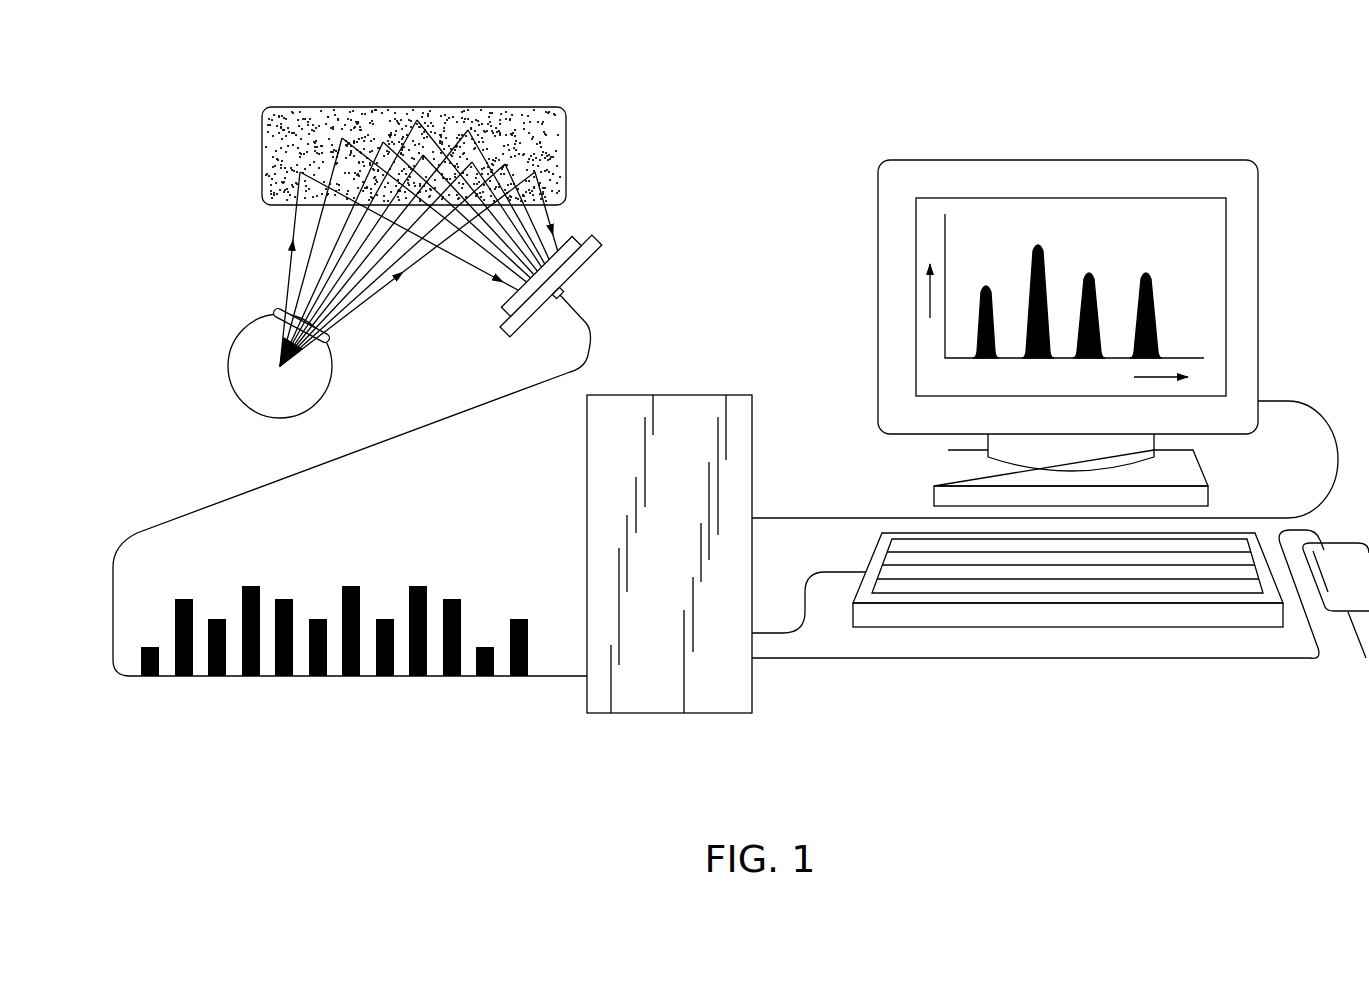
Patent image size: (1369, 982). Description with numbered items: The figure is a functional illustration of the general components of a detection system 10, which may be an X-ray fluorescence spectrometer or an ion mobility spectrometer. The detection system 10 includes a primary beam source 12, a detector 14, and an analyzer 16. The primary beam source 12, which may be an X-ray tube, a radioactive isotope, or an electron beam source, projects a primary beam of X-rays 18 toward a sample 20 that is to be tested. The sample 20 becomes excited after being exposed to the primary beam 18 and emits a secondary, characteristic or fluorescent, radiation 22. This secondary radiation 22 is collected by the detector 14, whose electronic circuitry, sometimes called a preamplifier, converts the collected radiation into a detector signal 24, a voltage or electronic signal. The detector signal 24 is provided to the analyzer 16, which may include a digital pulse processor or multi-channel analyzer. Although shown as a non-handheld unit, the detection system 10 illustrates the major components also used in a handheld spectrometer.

The detection system 10 is at (833, 172).
The primary beam source 12 is at (247, 385).
The detector 14 is at (565, 268).
The analyzer 16 is at (733, 688).
The primary beam of X-rays 18 is at (278, 260).
The sample 20 is at (395, 112).
The secondary radiation 22 is at (570, 217).
The detector signal 24 is at (313, 725).